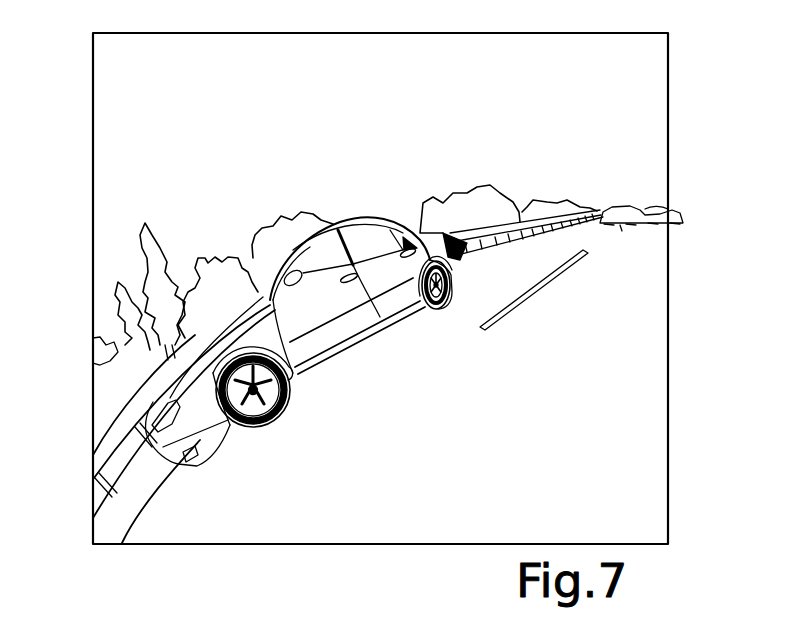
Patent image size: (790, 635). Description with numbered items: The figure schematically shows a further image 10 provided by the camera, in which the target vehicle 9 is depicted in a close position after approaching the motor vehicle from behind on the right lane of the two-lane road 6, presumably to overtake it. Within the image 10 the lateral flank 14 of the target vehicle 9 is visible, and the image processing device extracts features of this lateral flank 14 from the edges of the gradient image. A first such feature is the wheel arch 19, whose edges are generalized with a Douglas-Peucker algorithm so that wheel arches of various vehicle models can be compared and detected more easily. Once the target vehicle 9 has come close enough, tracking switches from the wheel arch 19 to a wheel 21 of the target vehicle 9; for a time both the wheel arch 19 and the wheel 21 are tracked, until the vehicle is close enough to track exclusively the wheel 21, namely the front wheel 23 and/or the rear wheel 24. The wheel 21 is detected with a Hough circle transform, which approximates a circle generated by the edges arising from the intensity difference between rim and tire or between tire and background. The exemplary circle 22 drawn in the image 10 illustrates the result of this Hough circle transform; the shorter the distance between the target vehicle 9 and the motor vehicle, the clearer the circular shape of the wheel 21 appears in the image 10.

The two-lane road 6 is at (593, 404).
The target vehicle 9 is at (301, 306).
The image 10 is at (670, 150).
The lateral flank 14 is at (212, 375).
The wheel arch 19 is at (460, 270).
The wheel 21 is at (455, 293).
The circle 22 is at (272, 429).
The front wheel 23 is at (243, 428).
The rear wheel 24 is at (456, 303).